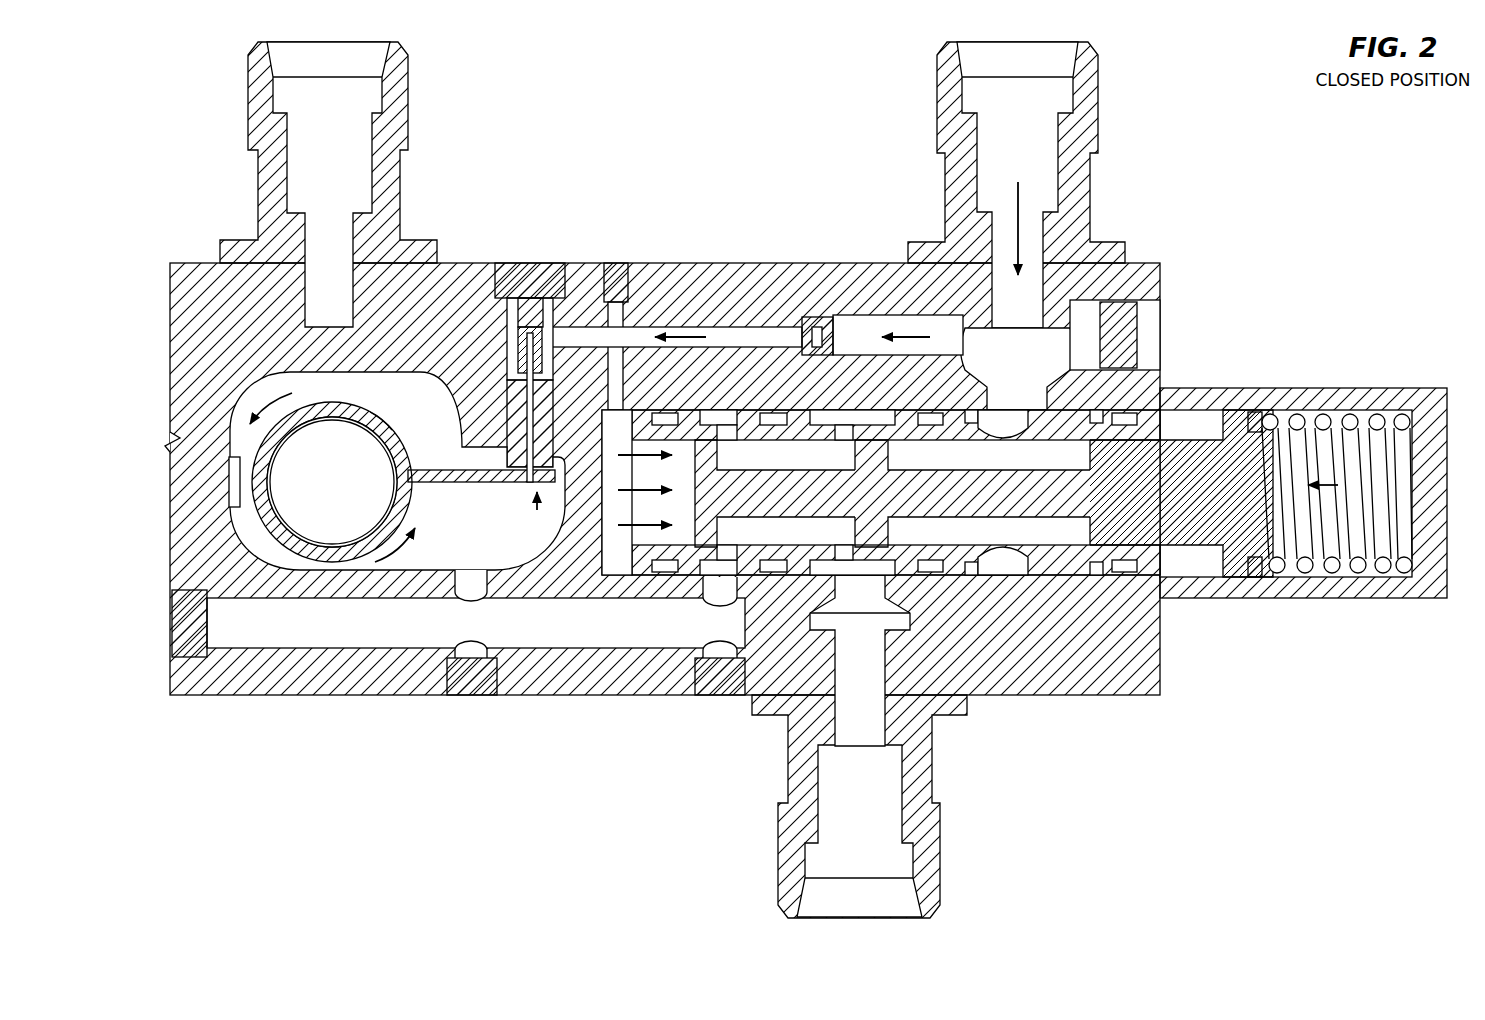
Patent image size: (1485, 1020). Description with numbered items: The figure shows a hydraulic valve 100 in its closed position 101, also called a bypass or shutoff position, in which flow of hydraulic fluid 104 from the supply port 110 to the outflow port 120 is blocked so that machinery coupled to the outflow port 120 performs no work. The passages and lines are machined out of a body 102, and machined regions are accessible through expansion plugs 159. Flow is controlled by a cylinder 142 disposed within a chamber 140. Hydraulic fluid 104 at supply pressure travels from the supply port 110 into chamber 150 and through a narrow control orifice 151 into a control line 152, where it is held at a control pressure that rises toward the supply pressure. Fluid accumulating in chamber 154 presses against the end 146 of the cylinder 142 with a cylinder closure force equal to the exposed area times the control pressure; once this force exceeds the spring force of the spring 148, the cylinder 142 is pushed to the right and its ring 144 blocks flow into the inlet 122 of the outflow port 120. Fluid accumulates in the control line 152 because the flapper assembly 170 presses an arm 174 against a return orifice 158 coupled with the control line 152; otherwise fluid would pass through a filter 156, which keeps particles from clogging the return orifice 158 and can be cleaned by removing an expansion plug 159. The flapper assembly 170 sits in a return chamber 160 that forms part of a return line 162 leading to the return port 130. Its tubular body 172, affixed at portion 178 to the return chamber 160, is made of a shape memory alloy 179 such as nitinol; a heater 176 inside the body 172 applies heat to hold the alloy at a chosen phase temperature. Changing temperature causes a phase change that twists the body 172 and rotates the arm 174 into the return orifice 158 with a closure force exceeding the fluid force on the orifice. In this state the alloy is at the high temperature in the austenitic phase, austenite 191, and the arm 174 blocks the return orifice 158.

The hydraulic valve 100 is at (769, 480).
The closed position 101 is at (769, 480).
The body 102 is at (171, 478).
The hydraulic fluid 104 is at (1046, 194).
The supply port 110 is at (1098, 90).
The outflow port 120 is at (940, 822).
The inlet 122 is at (845, 580).
The return port 130 is at (410, 117).
The chamber 140 is at (1288, 388).
The cylinder 142 is at (1165, 500).
The ring 144 is at (888, 447).
The end 146 is at (718, 446).
The spring 148 is at (1398, 412).
The chamber 150 is at (895, 358).
The control orifice 151 is at (817, 318).
The control line 152 is at (713, 349).
The chamber 154 is at (603, 555).
The filter 156 is at (517, 349).
The return orifice 158 is at (527, 483).
The expansion plug 159 is at (535, 270).
The return chamber 160 is at (230, 422).
The return line 162 is at (312, 292).
The flapper assembly 170 is at (328, 575).
The body 172 is at (345, 400).
The arm 174 is at (462, 470).
The heater 176 is at (308, 500).
The portion 178 is at (236, 482).
The shape memory alloy 179 is at (386, 426).
The austenite 191 is at (410, 493).